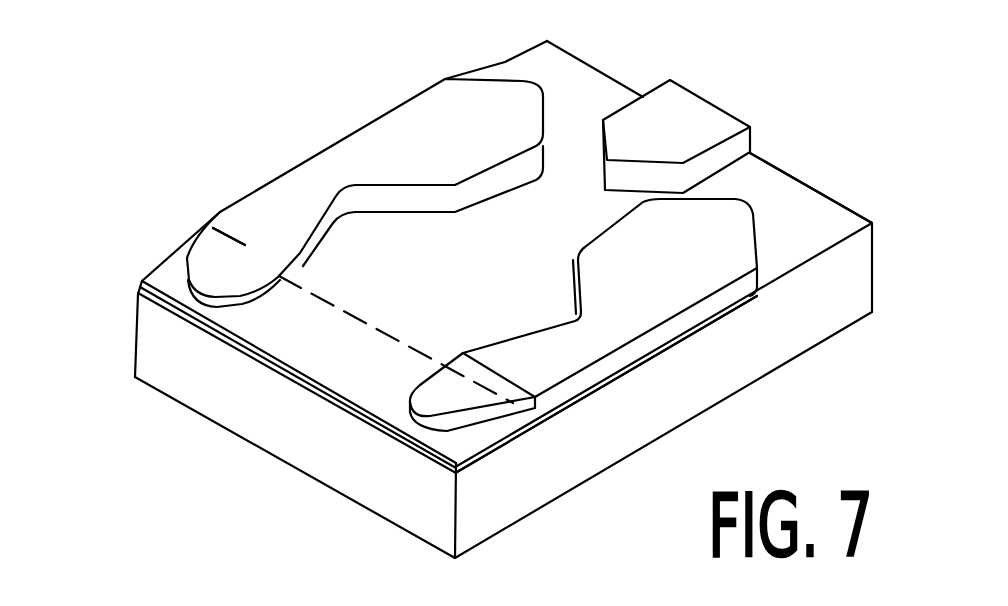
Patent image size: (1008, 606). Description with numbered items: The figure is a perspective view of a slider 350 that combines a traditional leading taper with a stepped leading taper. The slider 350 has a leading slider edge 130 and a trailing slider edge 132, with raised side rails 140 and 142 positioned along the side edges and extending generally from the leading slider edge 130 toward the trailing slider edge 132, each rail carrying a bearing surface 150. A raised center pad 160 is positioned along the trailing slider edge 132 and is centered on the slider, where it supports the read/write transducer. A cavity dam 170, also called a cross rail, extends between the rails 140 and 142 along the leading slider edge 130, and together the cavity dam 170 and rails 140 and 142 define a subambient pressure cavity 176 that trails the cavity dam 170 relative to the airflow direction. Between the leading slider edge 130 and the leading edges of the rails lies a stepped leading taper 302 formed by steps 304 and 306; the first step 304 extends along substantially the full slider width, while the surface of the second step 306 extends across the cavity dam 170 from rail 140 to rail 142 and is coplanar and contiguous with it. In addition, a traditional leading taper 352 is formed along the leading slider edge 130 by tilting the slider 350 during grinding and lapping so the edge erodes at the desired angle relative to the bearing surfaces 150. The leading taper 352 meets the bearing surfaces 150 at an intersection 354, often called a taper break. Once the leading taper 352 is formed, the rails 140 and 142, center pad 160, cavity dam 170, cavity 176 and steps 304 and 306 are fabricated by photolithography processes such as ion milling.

The leading slider edge 130 is at (417, 507).
The trailing slider edge 132 is at (818, 191).
The raised side rail 140 is at (708, 263).
The raised side rail 142 is at (465, 98).
The bearing surface 150 is at (400, 128).
The raised center pad 160 is at (706, 113).
The cavity dam 170 is at (347, 284).
The subambient pressure cavity 176 is at (531, 253).
The stepped leading taper 302 is at (142, 255).
The step 304 is at (141, 291).
The step 306 is at (180, 266).
The slider 350 is at (120, 170).
The leading taper 352 is at (318, 352).
The intersection 354 is at (246, 243).